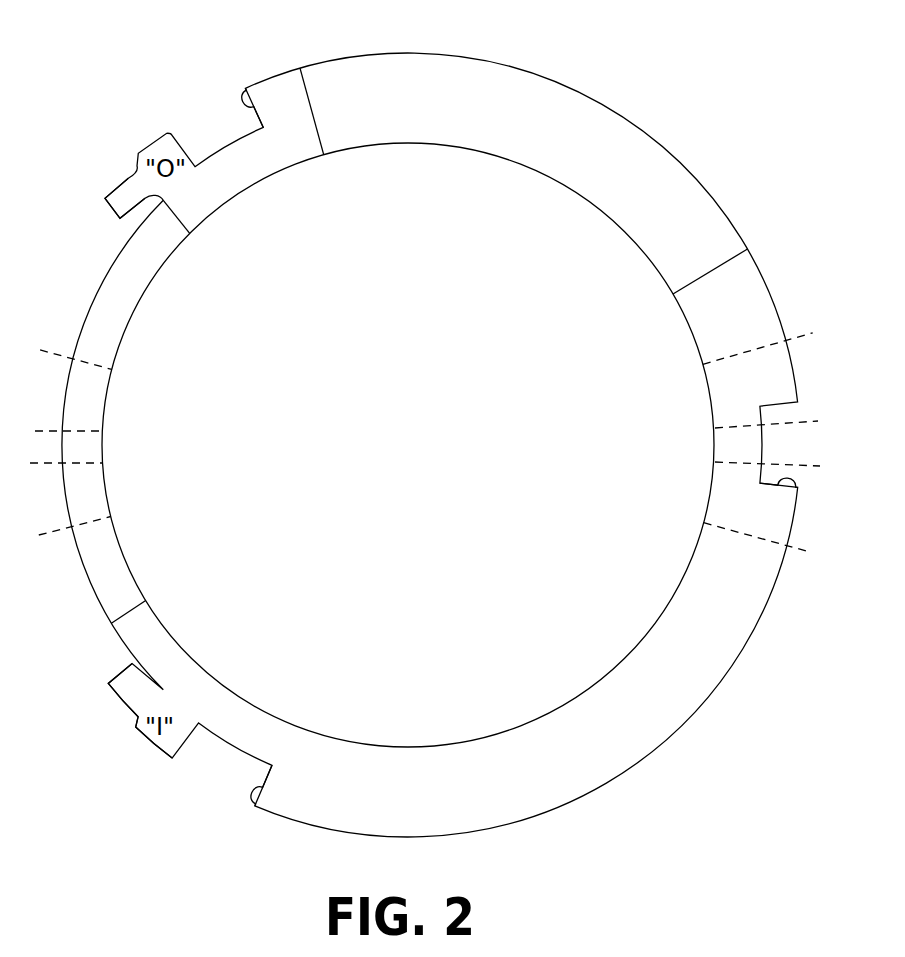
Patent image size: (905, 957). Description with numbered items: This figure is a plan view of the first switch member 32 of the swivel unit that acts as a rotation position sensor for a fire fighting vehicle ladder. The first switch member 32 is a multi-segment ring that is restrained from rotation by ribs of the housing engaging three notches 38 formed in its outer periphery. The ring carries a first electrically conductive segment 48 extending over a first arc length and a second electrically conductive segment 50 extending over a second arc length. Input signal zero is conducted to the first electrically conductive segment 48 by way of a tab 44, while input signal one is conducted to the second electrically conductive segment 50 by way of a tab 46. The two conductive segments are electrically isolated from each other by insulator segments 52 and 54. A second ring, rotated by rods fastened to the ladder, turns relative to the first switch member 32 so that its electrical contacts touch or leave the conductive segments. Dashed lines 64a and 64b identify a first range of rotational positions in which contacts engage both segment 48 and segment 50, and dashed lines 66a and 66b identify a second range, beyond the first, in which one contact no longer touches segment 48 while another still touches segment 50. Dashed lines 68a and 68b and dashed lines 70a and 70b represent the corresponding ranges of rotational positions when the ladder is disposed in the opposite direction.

The first switch member 32 is at (522, 66).
The notches 38 is at (247, 107).
The tab 44 is at (119, 216).
The tab 46 is at (120, 698).
The first electrically conductive segment 48 is at (299, 157).
The second electrically conductive segment 50 is at (575, 698).
The insulator segment 52 is at (702, 173).
The insulator segment 54 is at (92, 590).
The dashed line 64a is at (814, 421).
The dashed line 64b is at (799, 461).
The dashed line 66a is at (753, 348).
The dashed line 66b is at (772, 545).
The dashed line 68a is at (37, 425).
The dashed line 68b is at (38, 465).
The dashed line 70a is at (44, 350).
The dashed line 70b is at (39, 537).